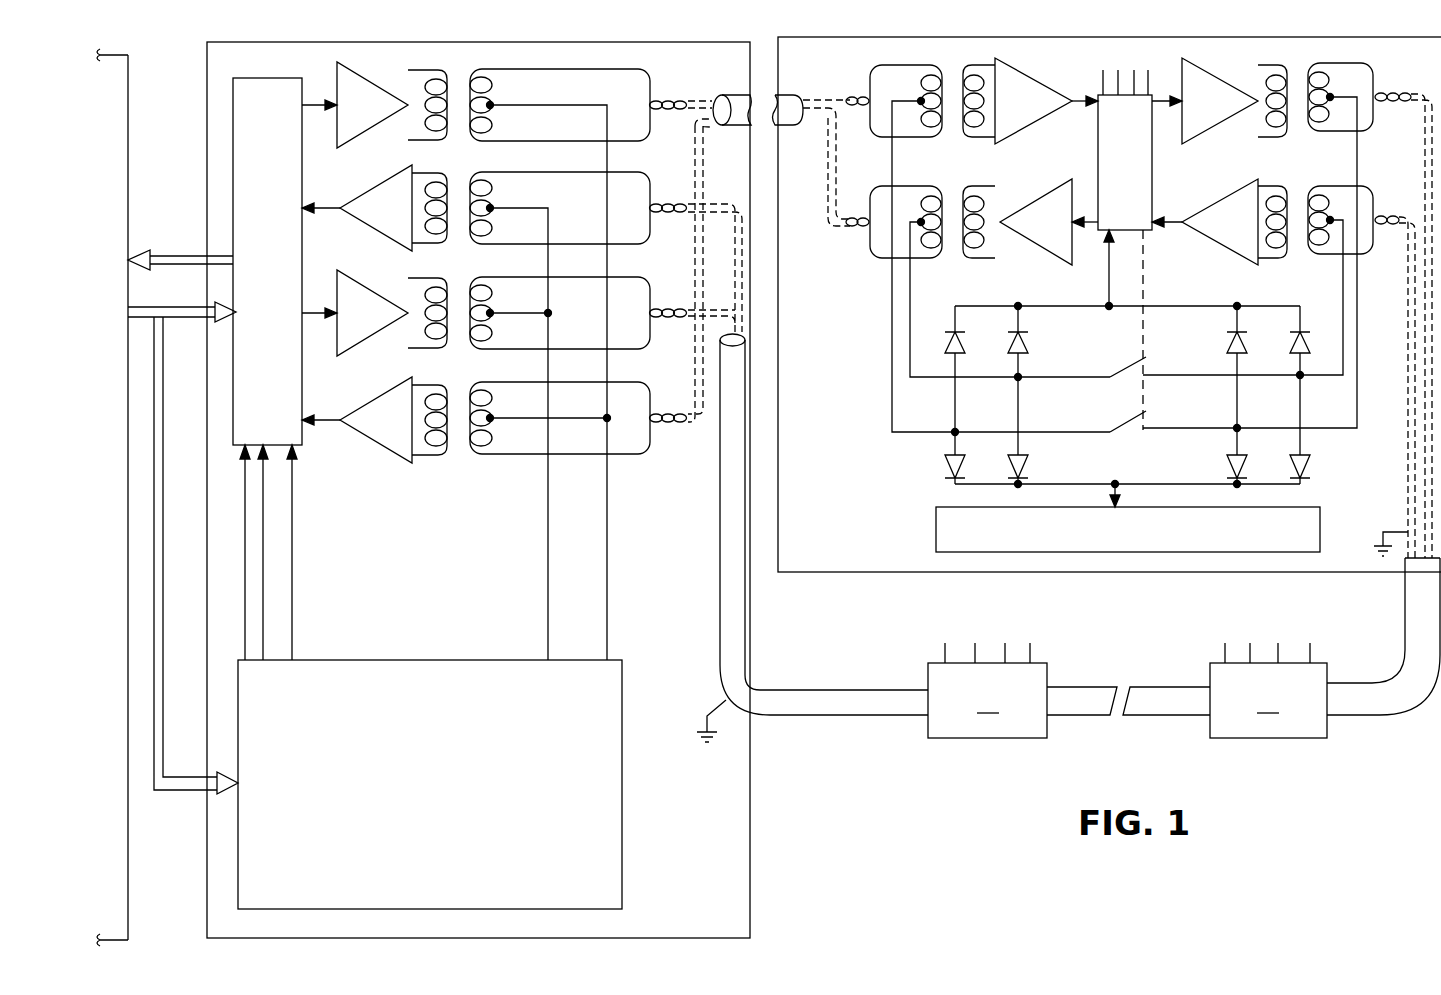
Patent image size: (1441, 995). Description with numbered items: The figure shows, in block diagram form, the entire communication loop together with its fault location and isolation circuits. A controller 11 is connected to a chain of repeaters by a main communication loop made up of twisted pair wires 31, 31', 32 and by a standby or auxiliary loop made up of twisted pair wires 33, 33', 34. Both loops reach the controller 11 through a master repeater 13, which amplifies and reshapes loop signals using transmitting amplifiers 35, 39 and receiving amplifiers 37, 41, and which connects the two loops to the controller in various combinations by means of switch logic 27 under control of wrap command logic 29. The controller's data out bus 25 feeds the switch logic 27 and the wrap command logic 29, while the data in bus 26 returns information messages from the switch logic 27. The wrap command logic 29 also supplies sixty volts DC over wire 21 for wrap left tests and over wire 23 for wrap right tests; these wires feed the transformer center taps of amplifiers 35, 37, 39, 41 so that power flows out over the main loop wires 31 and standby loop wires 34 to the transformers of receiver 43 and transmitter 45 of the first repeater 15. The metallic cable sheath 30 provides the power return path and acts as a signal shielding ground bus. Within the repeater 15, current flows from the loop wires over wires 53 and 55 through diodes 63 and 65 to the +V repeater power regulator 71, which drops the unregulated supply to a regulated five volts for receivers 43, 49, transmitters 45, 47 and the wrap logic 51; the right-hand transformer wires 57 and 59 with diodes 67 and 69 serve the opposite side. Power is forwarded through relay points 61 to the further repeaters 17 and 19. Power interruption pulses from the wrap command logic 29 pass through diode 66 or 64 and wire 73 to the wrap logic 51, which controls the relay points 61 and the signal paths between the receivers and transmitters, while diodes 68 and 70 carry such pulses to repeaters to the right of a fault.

The controller 11 is at (125, 70).
The master repeater 13 is at (692, 42).
The first repeater 15 is at (1440, 50).
The repeater 17 is at (1268, 695).
The repeater 19 is at (987, 695).
The wire 21 is at (607, 528).
The wire 23 is at (548, 522).
The data out bus 25 is at (165, 307).
The data in bus 26 is at (186, 254).
The switch logic 27 is at (257, 78).
The wrap command logic 29 is at (413, 660).
The metallic cable sheath 30 is at (1405, 656).
The twisted pair wire 31 is at (753, 84).
The twisted pair wire 31' is at (1403, 307).
The twisted pair wire 32 is at (735, 238).
The twisted pair wire 33 is at (808, 473).
The twisted pair wire 33' is at (1395, 367).
The twisted pair wire 34 is at (715, 188).
The transmitting amplifier 35 is at (350, 150).
The receiving amplifier 37 is at (360, 196).
The transmitting amplifier 39 is at (342, 277).
The receiving amplifier 41 is at (372, 402).
The receiver 43 is at (1072, 82).
The transmitter 45 is at (1070, 178).
The transmitter 47 is at (1211, 142).
The receiver 49 is at (1210, 202).
The wrap logic 51 is at (1098, 152).
The wire 53 is at (914, 310).
The wire 55 is at (892, 322).
The wire 57 is at (1343, 338).
The wire 59 is at (1357, 418).
The relay points 61 is at (1128, 433).
The diode 63 is at (1030, 465).
The diode 64 is at (1009, 345).
The diode 65 is at (947, 464).
The diode 66 is at (950, 332).
The diode 67 is at (1228, 465).
The diode 68 is at (1230, 332).
The diode 69 is at (1306, 480).
The diode 70 is at (1292, 336).
The +V repeater power regulator 71 is at (936, 528).
The wire 73 is at (1109, 280).